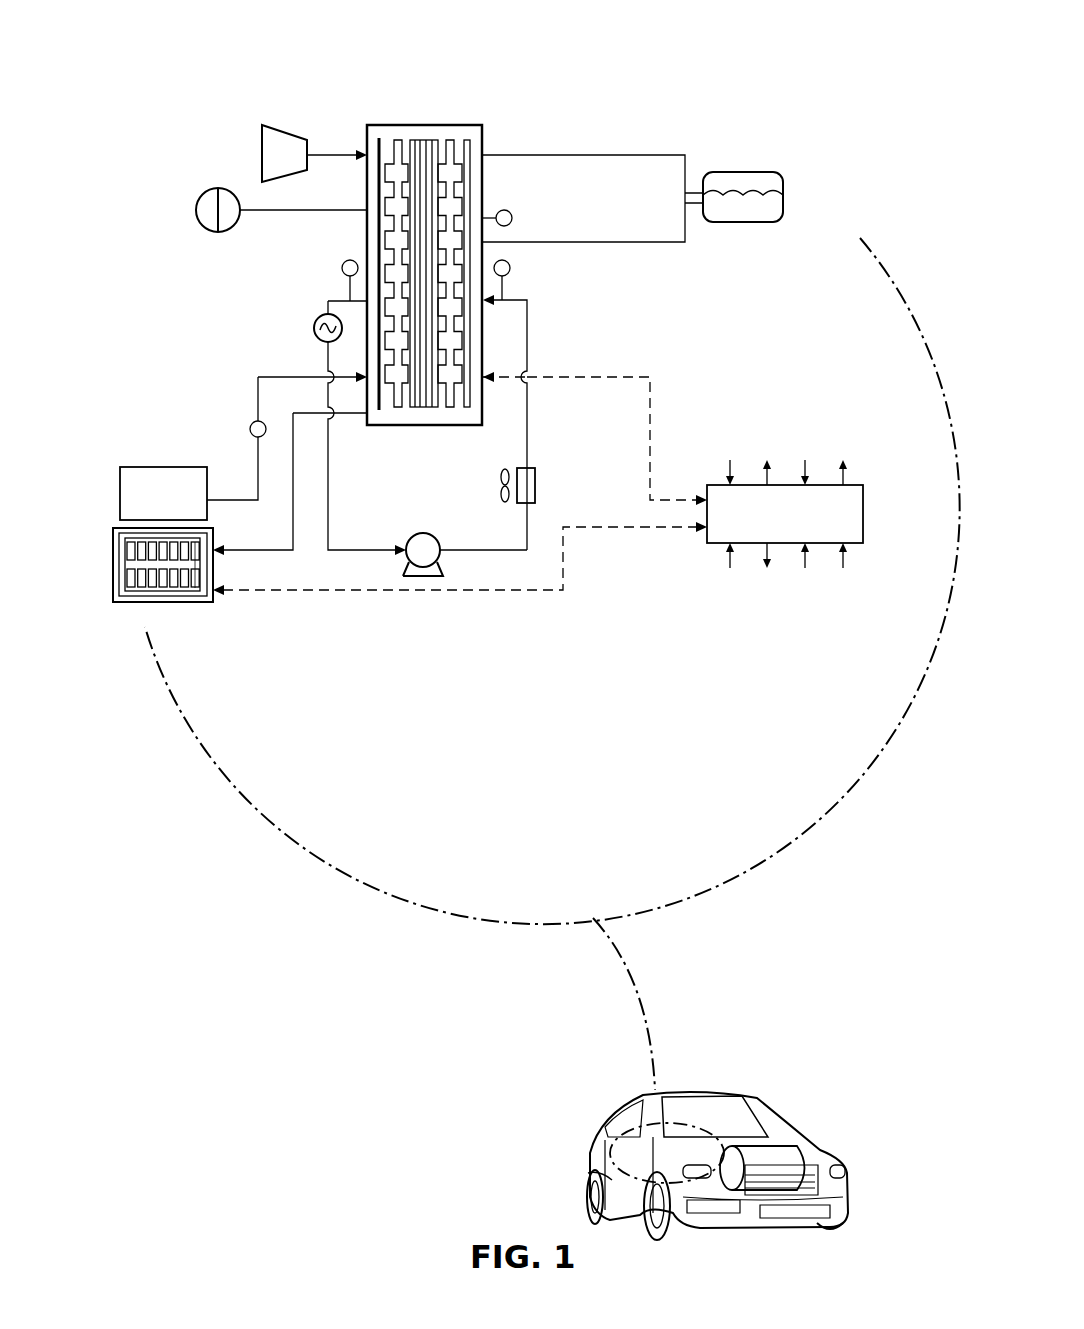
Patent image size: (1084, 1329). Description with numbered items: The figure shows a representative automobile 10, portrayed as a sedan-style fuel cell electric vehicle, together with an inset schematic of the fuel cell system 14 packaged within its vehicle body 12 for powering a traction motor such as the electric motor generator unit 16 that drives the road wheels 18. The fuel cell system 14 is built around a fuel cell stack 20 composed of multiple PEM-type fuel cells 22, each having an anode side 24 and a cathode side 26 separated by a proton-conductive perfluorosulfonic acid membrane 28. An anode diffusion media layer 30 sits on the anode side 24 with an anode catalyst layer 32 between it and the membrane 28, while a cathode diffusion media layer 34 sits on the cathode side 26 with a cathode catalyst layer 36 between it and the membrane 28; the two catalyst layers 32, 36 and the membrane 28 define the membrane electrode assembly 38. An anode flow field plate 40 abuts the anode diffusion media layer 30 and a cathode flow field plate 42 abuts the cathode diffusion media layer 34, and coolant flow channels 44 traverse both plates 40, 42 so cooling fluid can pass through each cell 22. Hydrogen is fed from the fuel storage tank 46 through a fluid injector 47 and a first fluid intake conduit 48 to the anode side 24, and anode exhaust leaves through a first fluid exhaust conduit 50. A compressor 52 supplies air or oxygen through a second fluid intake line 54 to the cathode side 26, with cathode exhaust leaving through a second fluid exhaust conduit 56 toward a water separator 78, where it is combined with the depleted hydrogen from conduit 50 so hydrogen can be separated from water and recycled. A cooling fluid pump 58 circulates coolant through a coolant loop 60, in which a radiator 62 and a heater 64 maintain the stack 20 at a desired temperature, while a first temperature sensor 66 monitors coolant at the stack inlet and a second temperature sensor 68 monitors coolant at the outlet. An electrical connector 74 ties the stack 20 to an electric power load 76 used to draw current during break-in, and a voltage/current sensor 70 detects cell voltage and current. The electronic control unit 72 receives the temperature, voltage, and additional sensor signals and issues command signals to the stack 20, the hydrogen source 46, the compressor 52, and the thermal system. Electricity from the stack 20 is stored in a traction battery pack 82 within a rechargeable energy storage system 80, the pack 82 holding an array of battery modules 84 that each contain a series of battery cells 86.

The automobile 10 is at (790, 1066).
The vehicle body 12 is at (812, 1150).
The fuel cell system 14 is at (780, 56).
The electric motor generator unit 16 is at (775, 1148).
The road wheels 18 is at (590, 1186).
The fuel cell stack 20 is at (465, 138).
The fuel cell 22 is at (490, 128).
The anode side 24 is at (358, 188).
The cathode side 26 is at (492, 197).
The proton-conductive perfluorosulfonic acid membrane 28 is at (418, 138).
The anode diffusion media layer 30 is at (398, 138).
The anode catalyst layer 32 is at (406, 138).
The cathode diffusion media layer 34 is at (440, 138).
The cathode catalyst layer 36 is at (427, 138).
The membrane electrode assembly 38 is at (407, 407).
The anode flow field plate 40 is at (396, 403).
The cathode flow field plate 42 is at (450, 403).
The coolant flow channels 44 is at (452, 181).
The fuel storage tank 46 is at (145, 467).
The fluid injector 47 is at (250, 429).
The fluid intake conduit 48 is at (252, 378).
The fluid exhaust conduit 50 is at (640, 243).
The compressor 52 is at (262, 140).
The fluid intake line 54 is at (331, 150).
The fluid exhaust conduit 56 is at (645, 155).
The cooling fluid pump 58 is at (406, 540).
The coolant loop 60 is at (528, 420).
The radiator 62 is at (535, 478).
The heater 64 is at (314, 326).
The first temperature sensor 66 is at (512, 266).
The second temperature sensor 68 is at (342, 266).
The voltage/current sensor 70 is at (512, 218).
The electronic control unit 72 is at (863, 498).
The electrical connector 74 is at (275, 213).
The electric power load 76 is at (196, 210).
The water separator 78 is at (766, 172).
The rechargeable energy storage system 80 is at (114, 532).
The traction battery pack 82 is at (126, 548).
The battery module 84 is at (197, 540).
The battery cell 86 is at (126, 585).